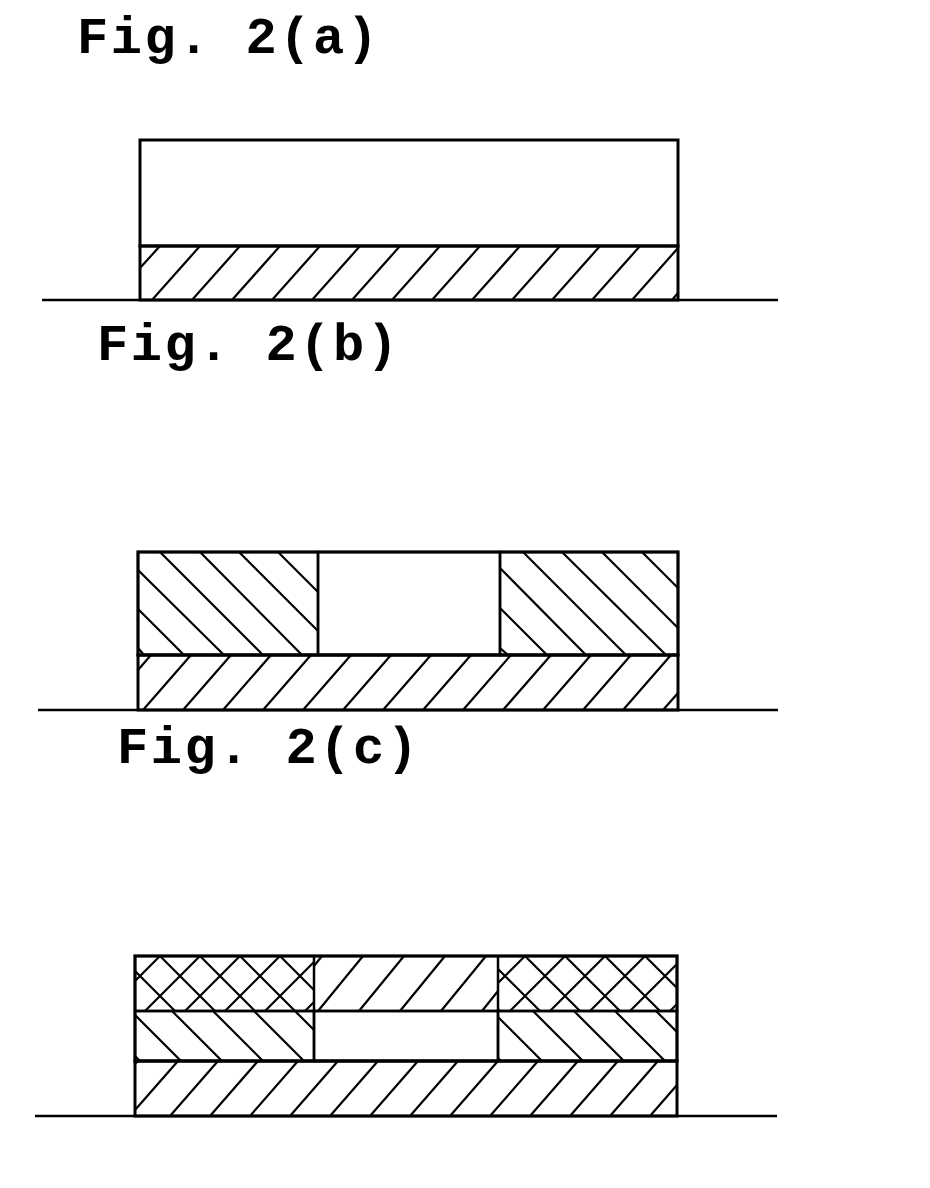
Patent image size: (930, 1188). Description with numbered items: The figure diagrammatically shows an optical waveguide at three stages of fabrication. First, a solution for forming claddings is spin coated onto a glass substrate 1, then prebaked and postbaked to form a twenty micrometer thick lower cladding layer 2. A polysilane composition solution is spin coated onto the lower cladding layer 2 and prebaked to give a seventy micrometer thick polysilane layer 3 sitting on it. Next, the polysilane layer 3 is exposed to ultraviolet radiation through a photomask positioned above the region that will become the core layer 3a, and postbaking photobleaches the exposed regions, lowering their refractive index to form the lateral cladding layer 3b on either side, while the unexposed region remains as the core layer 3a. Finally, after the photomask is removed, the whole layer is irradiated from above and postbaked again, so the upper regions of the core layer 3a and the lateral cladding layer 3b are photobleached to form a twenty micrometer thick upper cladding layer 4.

In FIG. 2A, the glass substrate 1 is at (730, 320).
In FIG. 2B, the glass substrate 1 is at (723, 725).
In FIG. 2C, the glass substrate 1 is at (722, 1136).
In FIG. 2A, the lower cladding layer 2 is at (655, 272).
In FIG. 2B, the lower cladding layer 2 is at (658, 687).
In FIG. 2C, the lower cladding layer 2 is at (662, 1087).
In FIG. 2A, the polysilane layer 3 is at (652, 193).
In FIG. 2B, the polysilane layer 3 is at (119, 552).
In FIG. 2C, the polysilane layer 3 is at (116, 956).
In FIG. 2B, the core layer 3a is at (417, 573).
In FIG. 2C, the core layer 3a is at (442, 1022).
In FIG. 2B, the lateral cladding layer 3b is at (230, 573).
In FIG. 2C, the lateral cladding layer 3b is at (213, 1033).
In FIG. 2C, the upper cladding layer 4 is at (365, 977).